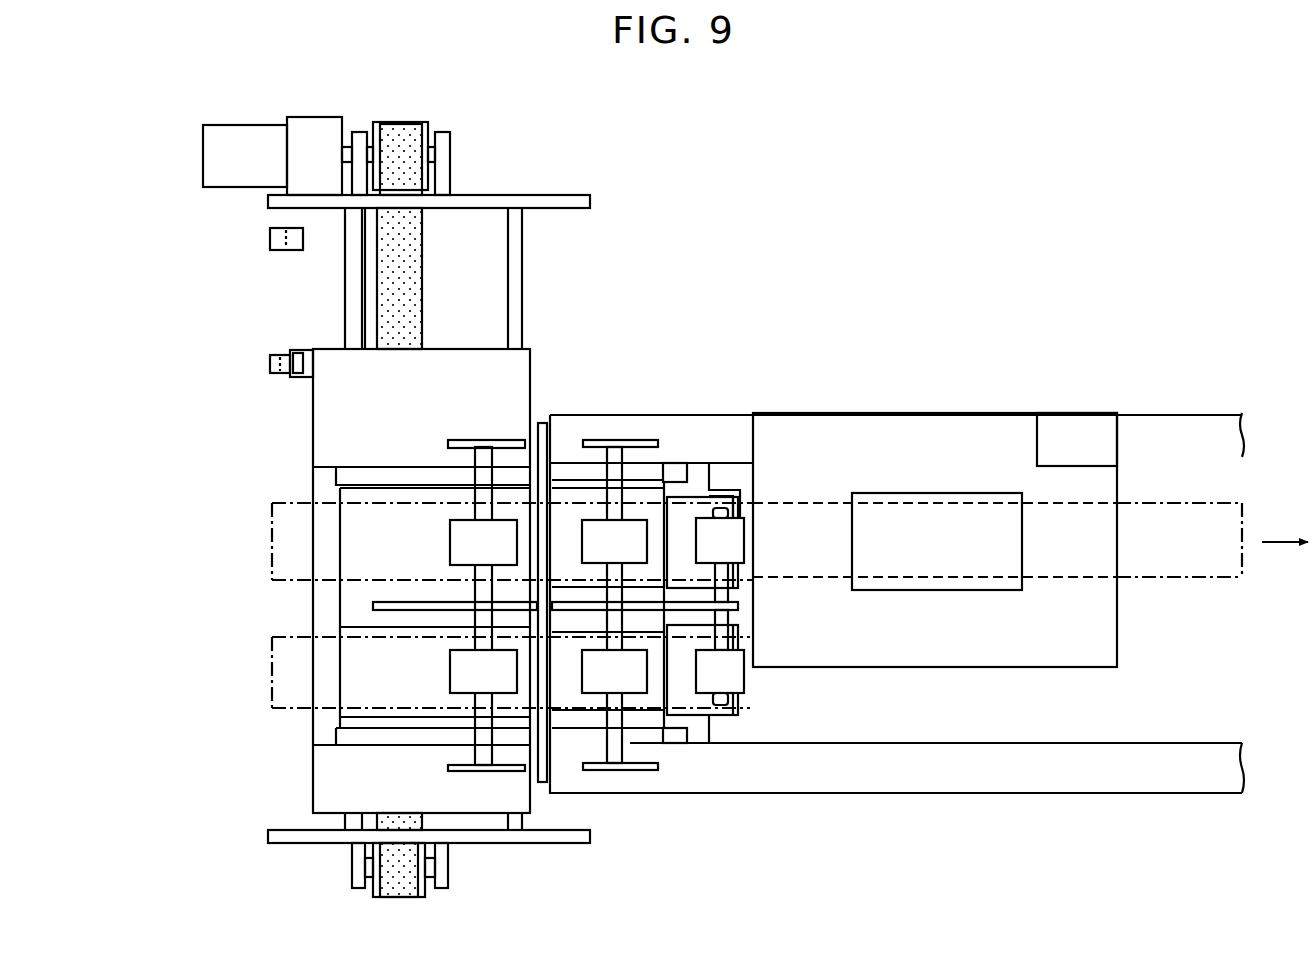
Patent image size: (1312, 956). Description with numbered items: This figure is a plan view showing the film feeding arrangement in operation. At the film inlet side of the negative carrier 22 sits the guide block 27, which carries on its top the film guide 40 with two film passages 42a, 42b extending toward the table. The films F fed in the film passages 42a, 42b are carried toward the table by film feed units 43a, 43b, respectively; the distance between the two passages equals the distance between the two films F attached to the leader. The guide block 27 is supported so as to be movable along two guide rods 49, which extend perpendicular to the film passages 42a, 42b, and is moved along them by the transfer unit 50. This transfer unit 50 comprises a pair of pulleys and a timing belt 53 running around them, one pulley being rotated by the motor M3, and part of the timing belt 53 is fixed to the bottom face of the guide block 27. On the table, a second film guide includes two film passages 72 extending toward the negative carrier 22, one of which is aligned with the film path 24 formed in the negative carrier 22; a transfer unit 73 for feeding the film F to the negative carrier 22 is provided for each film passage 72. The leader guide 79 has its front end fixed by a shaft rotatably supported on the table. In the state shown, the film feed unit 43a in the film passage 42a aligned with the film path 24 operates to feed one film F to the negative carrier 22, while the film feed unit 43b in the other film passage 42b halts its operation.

The motor M3 is at (218, 152).
The transfer unit 50 is at (438, 121).
The guide rods 49 is at (352, 282).
The timing belt 53 is at (420, 297).
The guide block 27 is at (340, 357).
The film feed unit 43a is at (440, 535).
The film feed unit 43b is at (447, 662).
The film passage 42a is at (350, 504).
The film passage 42b is at (358, 708).
The film F is at (285, 660).
The film guide 40 is at (347, 593).
The film passages 72 is at (575, 506).
The transfer unit 73 is at (632, 516).
The leader guide 79 is at (690, 703).
The negative carrier 22 is at (845, 428).
The film path 24 is at (1085, 505).